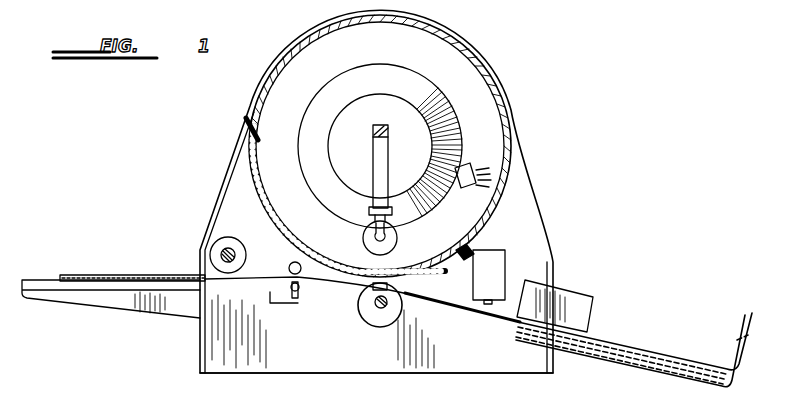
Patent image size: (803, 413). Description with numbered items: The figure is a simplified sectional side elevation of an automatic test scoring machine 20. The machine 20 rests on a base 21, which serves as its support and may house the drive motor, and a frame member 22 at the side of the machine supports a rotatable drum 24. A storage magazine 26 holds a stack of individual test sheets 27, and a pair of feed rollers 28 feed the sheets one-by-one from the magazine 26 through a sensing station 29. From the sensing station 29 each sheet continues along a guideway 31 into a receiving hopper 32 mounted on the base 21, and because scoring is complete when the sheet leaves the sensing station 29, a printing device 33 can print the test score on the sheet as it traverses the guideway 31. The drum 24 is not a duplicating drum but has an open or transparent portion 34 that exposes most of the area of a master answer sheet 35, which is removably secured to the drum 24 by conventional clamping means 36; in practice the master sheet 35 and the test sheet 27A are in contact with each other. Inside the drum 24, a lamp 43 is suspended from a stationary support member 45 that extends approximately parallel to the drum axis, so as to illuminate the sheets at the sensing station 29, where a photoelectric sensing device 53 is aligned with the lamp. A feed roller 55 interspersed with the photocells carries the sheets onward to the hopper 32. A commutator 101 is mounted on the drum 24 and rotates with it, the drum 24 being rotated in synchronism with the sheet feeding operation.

The test scoring machine 20 is at (566, 160).
The base 21 is at (216, 360).
The frame member 22 is at (246, 172).
The rotatable drum 24 is at (461, 40).
The storage magazine 26 is at (121, 256).
The test sheets 27 is at (166, 275).
The test sheet 27A is at (326, 283).
The feed rollers 28 is at (223, 237).
The sensing station 29 is at (354, 283).
The guideway 31 is at (474, 302).
The receiving hopper 32 is at (635, 338).
The printing device 33 is at (495, 268).
The transparent portion 34 is at (256, 134).
The master answer sheet 35 is at (264, 215).
The clamping means 36 is at (470, 252).
The lamp 43 is at (398, 241).
The support member 45 is at (389, 137).
The photoelectric sensing device 53 is at (386, 300).
The feed roller 55 is at (383, 322).
The commutator 101 is at (422, 99).